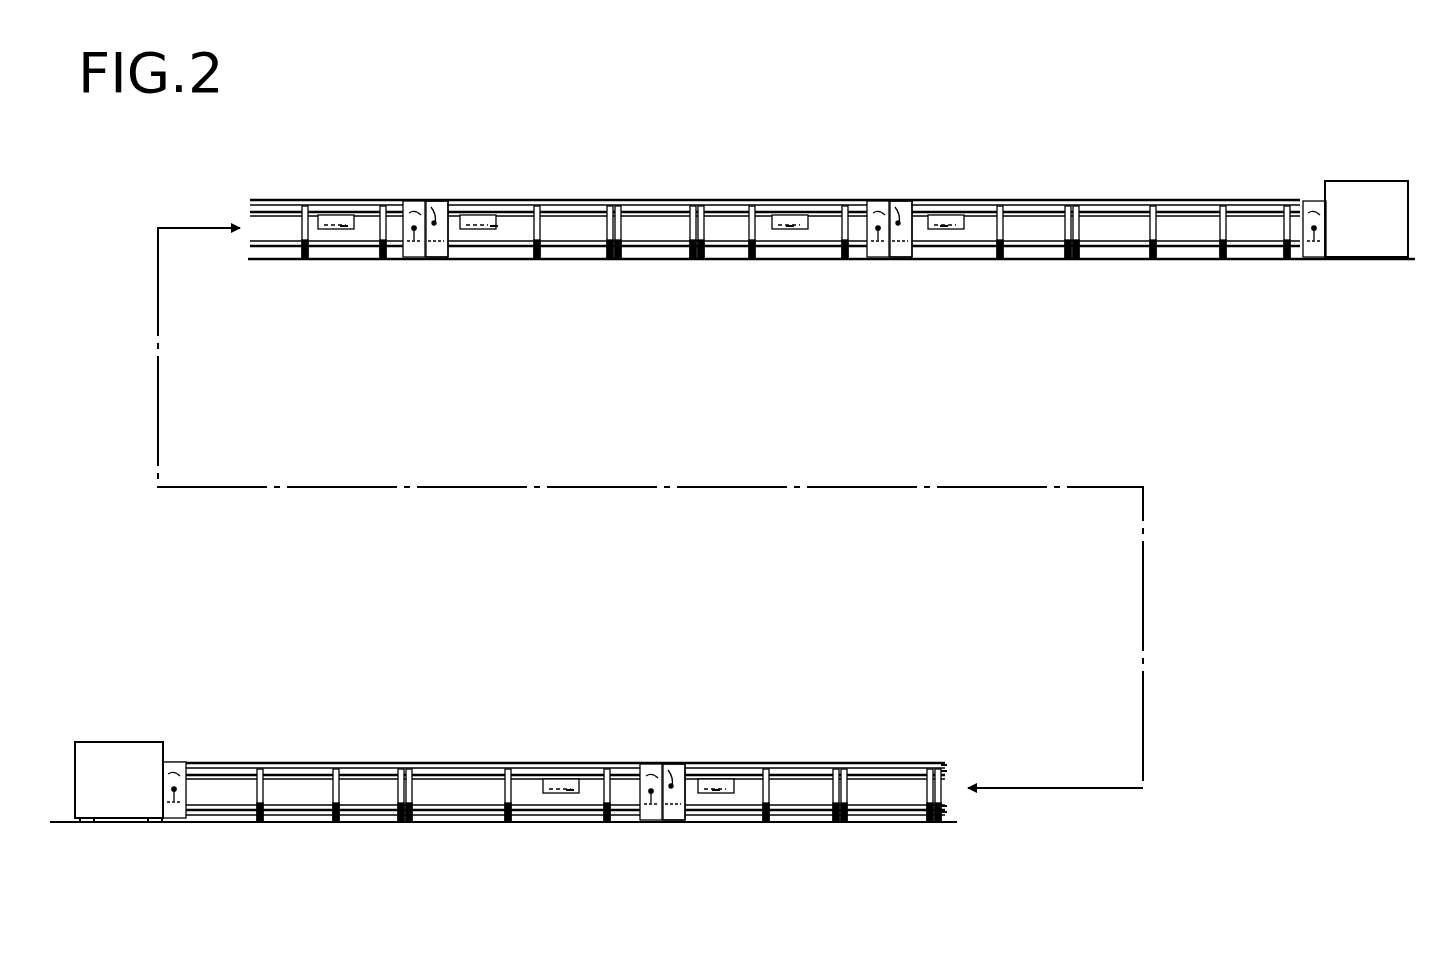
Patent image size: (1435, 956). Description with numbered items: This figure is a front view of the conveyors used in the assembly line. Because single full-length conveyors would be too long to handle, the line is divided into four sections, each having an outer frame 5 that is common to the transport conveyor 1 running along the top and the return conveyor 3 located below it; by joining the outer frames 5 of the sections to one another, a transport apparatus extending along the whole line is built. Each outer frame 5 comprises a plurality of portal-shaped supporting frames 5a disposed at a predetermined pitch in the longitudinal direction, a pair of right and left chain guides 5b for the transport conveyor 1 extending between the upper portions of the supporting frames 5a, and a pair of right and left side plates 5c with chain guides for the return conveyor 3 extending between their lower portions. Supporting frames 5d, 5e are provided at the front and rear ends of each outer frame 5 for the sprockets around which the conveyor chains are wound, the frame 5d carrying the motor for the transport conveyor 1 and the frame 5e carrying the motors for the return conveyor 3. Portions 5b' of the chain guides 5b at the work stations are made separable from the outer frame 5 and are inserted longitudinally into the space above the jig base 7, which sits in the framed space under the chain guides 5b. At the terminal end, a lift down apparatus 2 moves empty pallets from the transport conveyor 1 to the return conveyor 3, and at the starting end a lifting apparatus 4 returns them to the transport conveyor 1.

The transport conveyor 1 is at (302, 760).
The lift down apparatus 2 is at (120, 748).
The return conveyor 3 is at (315, 820).
The lifting apparatus 4 is at (1365, 182).
The outer frame 5 is at (660, 198).
The supporting frames 5a is at (750, 205).
The chain guides 5b is at (732, 462).
The portions of the chain guides 5b' is at (648, 469).
The side plates 5c is at (560, 246).
The supporting frame 5d is at (435, 212).
The supporting frame 5e is at (415, 212).
The jig base 7 is at (482, 212).